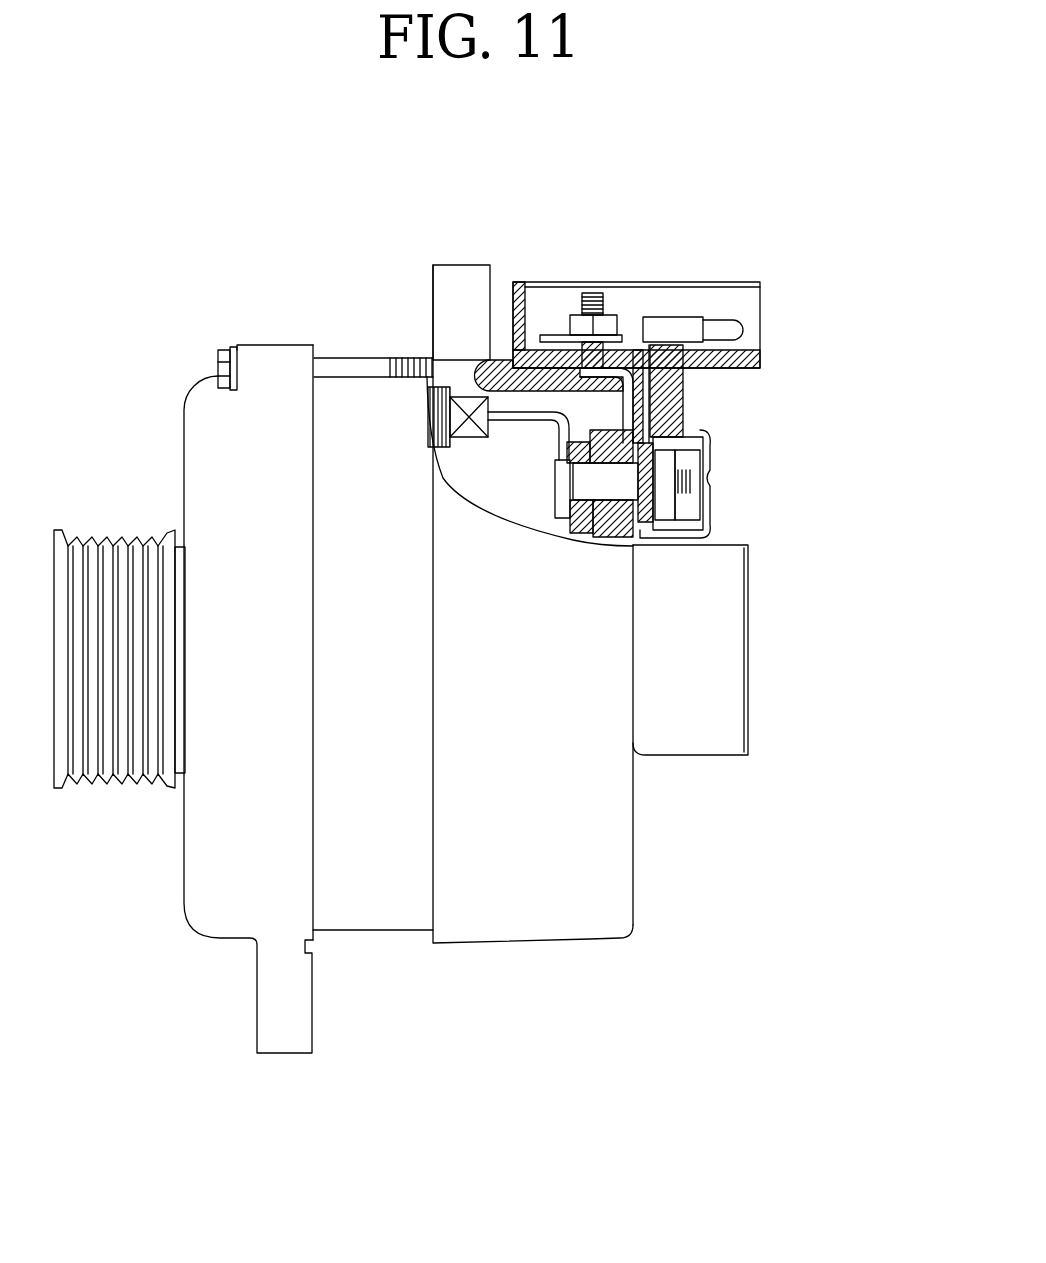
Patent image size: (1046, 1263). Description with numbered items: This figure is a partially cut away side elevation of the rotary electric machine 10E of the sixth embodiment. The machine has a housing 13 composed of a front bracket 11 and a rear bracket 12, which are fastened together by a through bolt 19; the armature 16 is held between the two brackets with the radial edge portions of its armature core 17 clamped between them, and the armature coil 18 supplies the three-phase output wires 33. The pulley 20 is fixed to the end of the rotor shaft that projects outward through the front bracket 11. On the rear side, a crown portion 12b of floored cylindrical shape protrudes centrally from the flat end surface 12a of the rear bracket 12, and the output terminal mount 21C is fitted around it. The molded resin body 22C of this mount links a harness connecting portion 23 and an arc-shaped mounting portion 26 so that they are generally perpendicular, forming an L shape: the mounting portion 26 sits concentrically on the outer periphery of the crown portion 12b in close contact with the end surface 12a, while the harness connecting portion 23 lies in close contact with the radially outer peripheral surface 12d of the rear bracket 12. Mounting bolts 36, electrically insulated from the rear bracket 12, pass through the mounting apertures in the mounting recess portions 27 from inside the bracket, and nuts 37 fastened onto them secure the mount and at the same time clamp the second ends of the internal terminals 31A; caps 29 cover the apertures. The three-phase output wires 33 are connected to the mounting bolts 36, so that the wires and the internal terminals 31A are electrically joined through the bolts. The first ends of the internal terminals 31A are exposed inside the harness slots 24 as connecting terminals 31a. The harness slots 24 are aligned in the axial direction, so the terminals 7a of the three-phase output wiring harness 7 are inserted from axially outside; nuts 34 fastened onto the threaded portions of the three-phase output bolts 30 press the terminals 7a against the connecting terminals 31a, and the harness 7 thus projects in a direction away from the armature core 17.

The rotary electric machine 10E is at (227, 157).
The front bracket 11 is at (208, 403).
The rear bracket 12 is at (573, 944).
The end surface 12a is at (634, 843).
The crown portion 12b is at (733, 647).
The radially outer peripheral surface 12d is at (482, 360).
The housing 13 is at (179, 827).
The armature 16 is at (368, 396).
The armature core 17 is at (432, 362).
The armature coil 18 is at (478, 434).
The through bolt 19 is at (342, 368).
The pulley 20 is at (108, 538).
The output terminal mount 21C is at (780, 262).
The molded resin body 22C is at (879, 337).
The harness connecting portion 23 is at (770, 352).
The harness slot 24 is at (737, 296).
The mounting portion 26 is at (690, 408).
The mounting recess portion 27 is at (695, 453).
The cap 29 is at (712, 524).
The three-phase output bolt 30 is at (592, 292).
The internal terminal 31A is at (654, 382).
The connecting terminal 31a is at (620, 346).
The three-phase output wire 33 is at (521, 423).
The nut 34 is at (612, 316).
The mounting bolt 36 is at (605, 489).
The nut 37 is at (668, 507).
The three-phase output wiring harness 7 is at (736, 325).
The terminal 7a is at (557, 334).